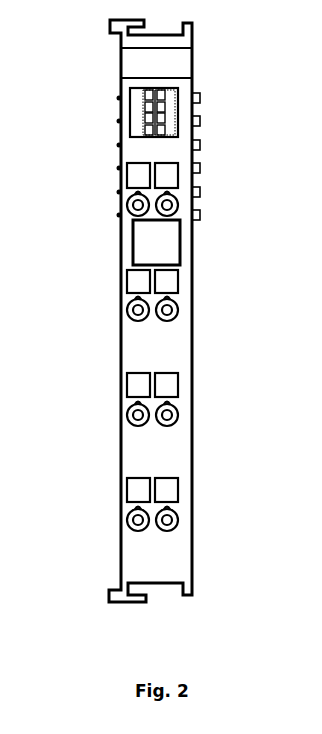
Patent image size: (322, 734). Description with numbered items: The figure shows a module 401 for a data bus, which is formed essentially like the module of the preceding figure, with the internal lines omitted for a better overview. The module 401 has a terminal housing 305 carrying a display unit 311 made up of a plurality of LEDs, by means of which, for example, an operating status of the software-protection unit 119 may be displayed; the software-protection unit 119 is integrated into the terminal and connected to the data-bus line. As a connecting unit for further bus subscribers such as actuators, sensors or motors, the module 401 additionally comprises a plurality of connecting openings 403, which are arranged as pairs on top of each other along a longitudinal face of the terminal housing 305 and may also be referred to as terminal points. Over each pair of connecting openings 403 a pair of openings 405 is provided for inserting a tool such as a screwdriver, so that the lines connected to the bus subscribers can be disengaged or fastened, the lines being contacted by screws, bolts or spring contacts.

The module 401 is at (215, 102).
The terminal housing 305 is at (165, 557).
The display unit 311 is at (145, 115).
The software-protection unit 119 is at (158, 243).
The openings 405 is at (138, 383).
The connecting openings 403 is at (130, 410).